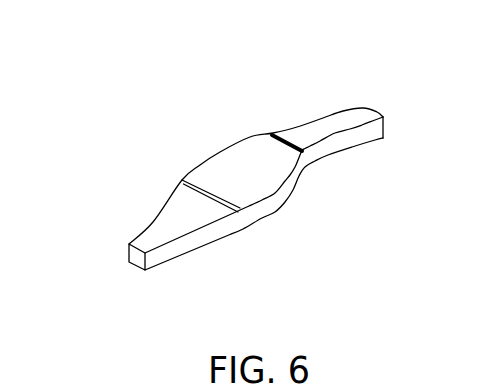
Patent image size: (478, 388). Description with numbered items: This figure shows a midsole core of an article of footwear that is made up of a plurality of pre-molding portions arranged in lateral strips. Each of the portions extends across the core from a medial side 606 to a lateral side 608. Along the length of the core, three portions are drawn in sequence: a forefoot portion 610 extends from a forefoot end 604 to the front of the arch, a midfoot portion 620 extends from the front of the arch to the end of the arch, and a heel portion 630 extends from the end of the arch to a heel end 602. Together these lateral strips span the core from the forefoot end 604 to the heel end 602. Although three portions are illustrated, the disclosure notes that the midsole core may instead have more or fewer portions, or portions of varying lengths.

The heel end 602 is at (277, 189).
The forefoot end 604 is at (135, 263).
The medial side 606 is at (258, 200).
The lateral side 608 is at (198, 163).
The forefoot portion 610 is at (153, 225).
The midfoot portion 620 is at (252, 163).
The heel portion 630 is at (335, 125).